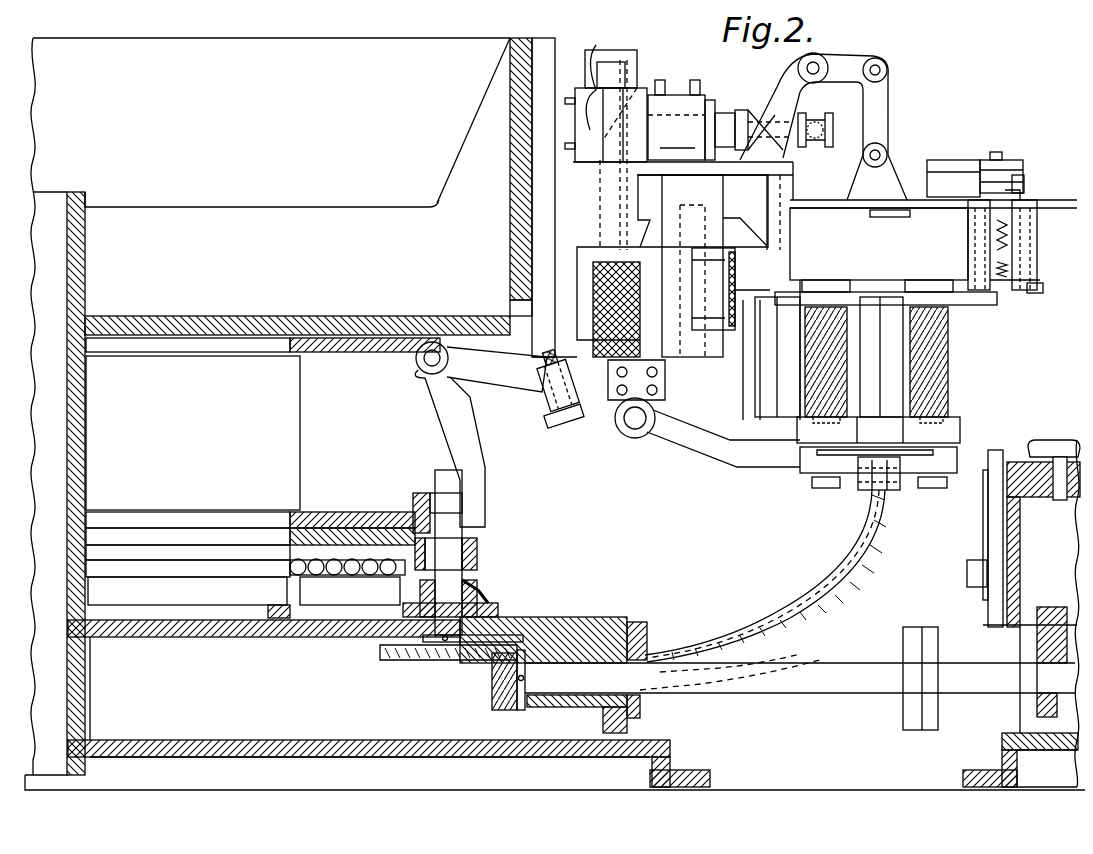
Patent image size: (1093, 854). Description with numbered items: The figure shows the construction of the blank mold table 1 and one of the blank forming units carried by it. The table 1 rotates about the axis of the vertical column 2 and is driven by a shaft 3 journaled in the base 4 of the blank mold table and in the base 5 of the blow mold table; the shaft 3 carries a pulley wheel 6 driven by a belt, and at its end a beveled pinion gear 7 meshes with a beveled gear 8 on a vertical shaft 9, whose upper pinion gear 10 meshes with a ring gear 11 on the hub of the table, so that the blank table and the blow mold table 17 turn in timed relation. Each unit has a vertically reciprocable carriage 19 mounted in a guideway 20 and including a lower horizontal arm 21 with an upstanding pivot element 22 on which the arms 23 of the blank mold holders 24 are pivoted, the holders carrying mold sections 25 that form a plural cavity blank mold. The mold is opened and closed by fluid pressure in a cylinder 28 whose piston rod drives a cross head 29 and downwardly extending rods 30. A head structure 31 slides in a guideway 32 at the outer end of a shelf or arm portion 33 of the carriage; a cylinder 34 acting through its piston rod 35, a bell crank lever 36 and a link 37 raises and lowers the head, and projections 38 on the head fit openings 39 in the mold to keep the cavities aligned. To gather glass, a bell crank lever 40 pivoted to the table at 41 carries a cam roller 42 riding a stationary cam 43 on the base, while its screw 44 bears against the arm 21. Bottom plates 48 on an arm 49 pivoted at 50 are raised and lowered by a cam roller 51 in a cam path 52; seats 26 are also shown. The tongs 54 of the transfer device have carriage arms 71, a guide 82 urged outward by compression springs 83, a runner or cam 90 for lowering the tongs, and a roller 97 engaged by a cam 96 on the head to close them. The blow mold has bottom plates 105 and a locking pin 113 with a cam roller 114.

The blank mold table 1 is at (270, 406).
The vertical column 2 is at (62, 200).
The shaft 3 is at (808, 672).
The base of the blank mold table 4 is at (578, 618).
The base of the blow mold table 5 is at (1037, 707).
The pulley wheel 6 is at (925, 642).
The beveled pinion gear 7 is at (492, 700).
The beveled gear 8 is at (398, 660).
The vertical shaft 9 is at (478, 590).
The pinion gear 10 is at (478, 552).
The ring gear 11 is at (430, 556).
The blow mold table 17 is at (988, 542).
The carriage 19 is at (560, 53).
The guideway 20 is at (520, 103).
The lower horizontal arm 21 is at (675, 352).
The pivot element 22 is at (700, 355).
The arms 23 is at (725, 395).
The blank mold holders 24 is at (748, 405).
The mold sections 25 is at (752, 295).
The spring seat 26 is at (790, 420).
The cylinder 28 is at (590, 143).
The cross head 29 is at (612, 52).
The rods 30 is at (645, 88).
The head structure 31 is at (860, 200).
The guideway 32 is at (770, 186).
The shelf or arm portion 33 is at (760, 165).
The cylinder 34 is at (680, 95).
The piston rod 35 is at (740, 125).
The bell crank lever 36 is at (840, 60).
The link 37 is at (880, 108).
The projections 38 is at (826, 290).
The openings 39 is at (790, 275).
The bell crank lever 40 is at (497, 380).
The pivot 41 is at (435, 350).
The cam roller 42 is at (462, 500).
The stationary cam 43 is at (413, 492).
The screw 44 is at (565, 425).
The bottom plates 48 is at (960, 423).
The arm 49 is at (728, 462).
The pivot 50 is at (634, 425).
The cam roller 51 is at (887, 490).
The cam path 52 is at (877, 518).
The tongs 54 is at (960, 305).
The arms 71 is at (1043, 283).
The guide 82 is at (903, 212).
The compression springs 83 is at (1000, 230).
The runner or cam 90 is at (1024, 178).
The cam 96 is at (975, 163).
The roller 97 is at (1005, 162).
The bottom plates 105 is at (1055, 448).
The pin 113 is at (988, 516).
The cam roller 114 is at (967, 572).